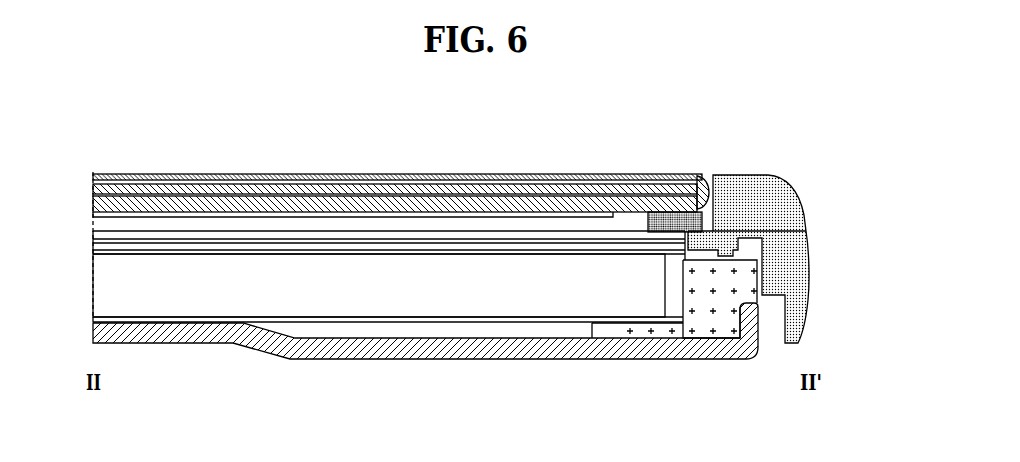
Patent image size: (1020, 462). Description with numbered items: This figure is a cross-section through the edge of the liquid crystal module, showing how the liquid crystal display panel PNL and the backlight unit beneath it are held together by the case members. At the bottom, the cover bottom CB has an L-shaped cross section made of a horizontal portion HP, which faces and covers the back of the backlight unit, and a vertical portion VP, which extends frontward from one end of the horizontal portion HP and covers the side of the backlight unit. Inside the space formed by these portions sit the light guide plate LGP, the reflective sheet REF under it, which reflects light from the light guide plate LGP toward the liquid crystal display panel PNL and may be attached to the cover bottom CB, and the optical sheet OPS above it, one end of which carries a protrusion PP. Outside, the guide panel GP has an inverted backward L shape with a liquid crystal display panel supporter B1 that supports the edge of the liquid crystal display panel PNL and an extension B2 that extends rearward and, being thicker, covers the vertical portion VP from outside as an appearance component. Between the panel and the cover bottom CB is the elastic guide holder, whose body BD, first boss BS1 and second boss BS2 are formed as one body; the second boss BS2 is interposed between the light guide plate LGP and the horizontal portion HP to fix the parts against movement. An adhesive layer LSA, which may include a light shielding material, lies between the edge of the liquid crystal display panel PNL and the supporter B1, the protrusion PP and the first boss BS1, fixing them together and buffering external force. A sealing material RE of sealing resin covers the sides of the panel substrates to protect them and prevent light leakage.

The liquid crystal display panel PNL is at (85, 176).
The optical sheet OPS is at (85, 230).
The light guide plate LGP is at (120, 283).
The reflective sheet REF is at (120, 320).
The adhesive layer LSA is at (668, 210).
The sealing material RE is at (691, 231).
The protrusion PP is at (693, 235).
The guide panel GP is at (801, 259).
The liquid crystal display panel supporter B1 is at (803, 228).
The extension B2 is at (803, 260).
The first boss BS1 is at (752, 285).
The second boss BS2 is at (621, 330).
The body BD is at (711, 285).
The horizontal portion HP is at (694, 340).
The vertical portion VP is at (755, 322).
The cover bottom CB is at (427, 378).